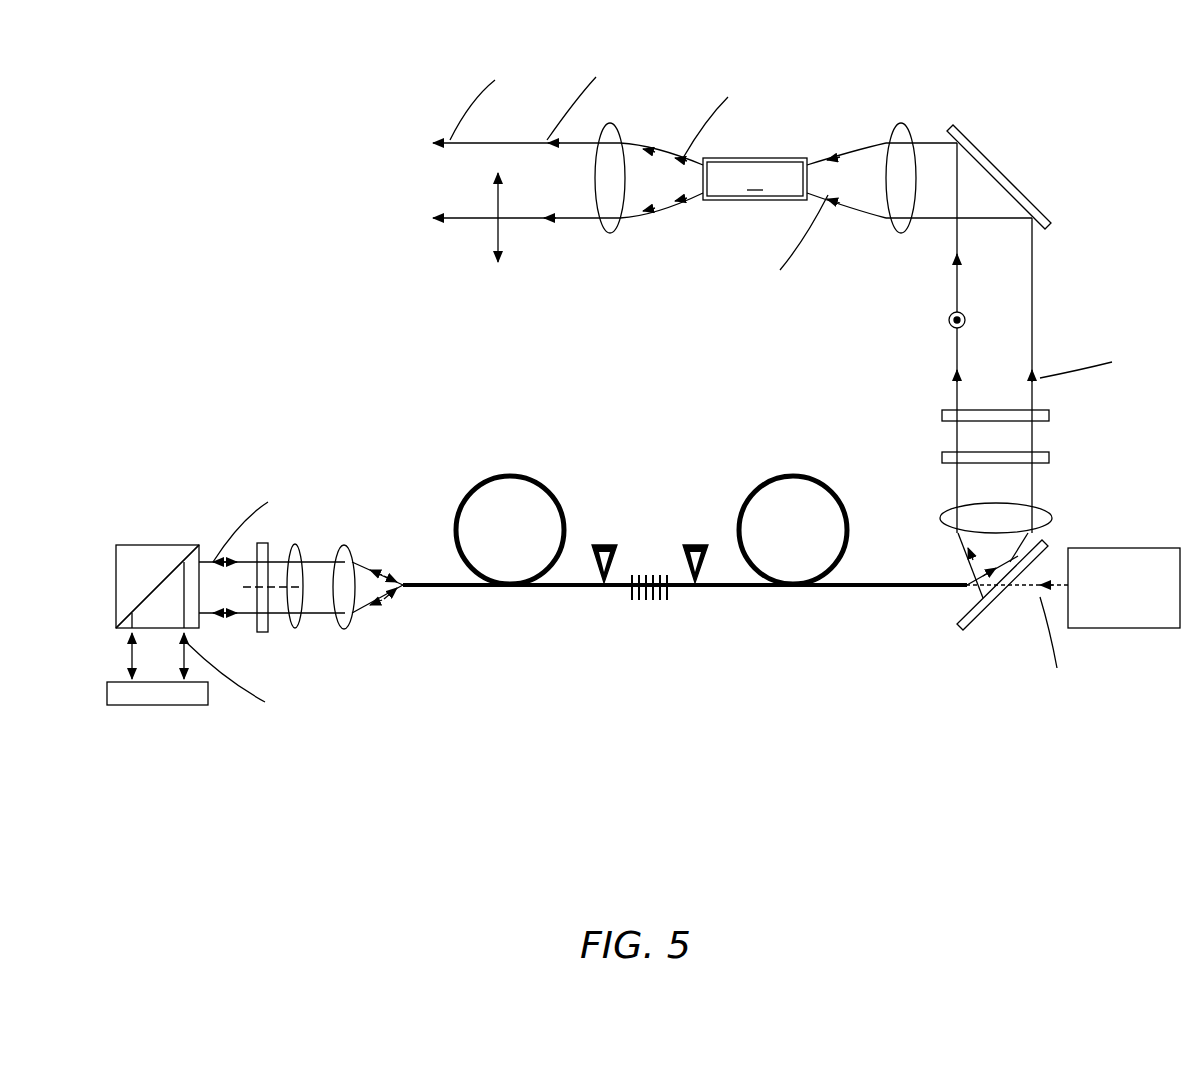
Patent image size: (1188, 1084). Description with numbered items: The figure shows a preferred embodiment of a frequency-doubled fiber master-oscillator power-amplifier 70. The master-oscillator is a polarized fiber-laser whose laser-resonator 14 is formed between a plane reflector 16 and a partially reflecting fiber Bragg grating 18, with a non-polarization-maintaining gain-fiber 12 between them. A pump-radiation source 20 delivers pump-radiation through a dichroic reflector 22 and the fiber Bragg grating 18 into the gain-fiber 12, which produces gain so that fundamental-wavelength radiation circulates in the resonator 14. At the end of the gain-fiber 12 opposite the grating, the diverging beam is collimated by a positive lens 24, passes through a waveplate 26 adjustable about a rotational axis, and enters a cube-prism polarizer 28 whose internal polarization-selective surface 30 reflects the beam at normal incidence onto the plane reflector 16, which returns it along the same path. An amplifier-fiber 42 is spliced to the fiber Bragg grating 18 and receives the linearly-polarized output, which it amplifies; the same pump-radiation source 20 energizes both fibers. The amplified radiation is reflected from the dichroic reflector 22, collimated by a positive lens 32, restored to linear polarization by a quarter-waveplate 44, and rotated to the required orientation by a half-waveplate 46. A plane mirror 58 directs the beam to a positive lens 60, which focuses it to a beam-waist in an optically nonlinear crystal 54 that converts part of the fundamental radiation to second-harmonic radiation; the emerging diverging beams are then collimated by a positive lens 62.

The gain-fiber 12 is at (455, 600).
The laser-resonator 14 is at (213, 598).
The plane reflector 16 is at (117, 678).
The fiber Bragg grating 18 is at (642, 610).
The pump-radiation source 20 is at (1120, 633).
The dichroic reflector 22 is at (967, 627).
The positive lens 24 is at (347, 543).
The waveplate 26 is at (262, 635).
The polarizer 28 is at (167, 537).
The internal polarization-selective surface 30 is at (150, 590).
The positive lens 32 is at (943, 512).
The amplifier-fiber 42 is at (880, 592).
The quarter-waveplate 44 is at (1052, 456).
The half-waveplate 46 is at (940, 415).
The optically nonlinear crystal 54 is at (757, 203).
The plane mirror 58 is at (993, 172).
The positive lens 60 is at (900, 130).
The positive lens 62 is at (608, 234).
The frequency-doubled fiber-MOPA 70 is at (880, 765).